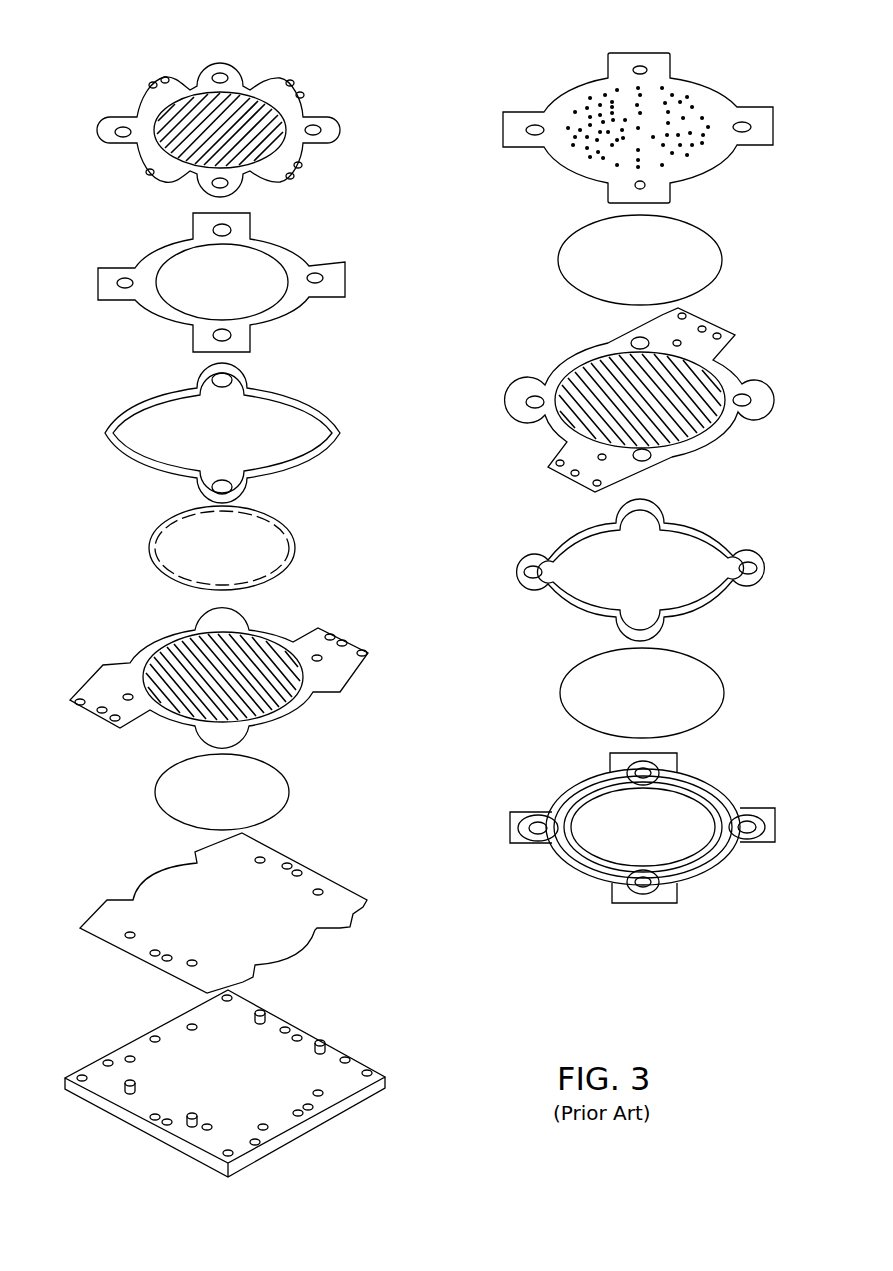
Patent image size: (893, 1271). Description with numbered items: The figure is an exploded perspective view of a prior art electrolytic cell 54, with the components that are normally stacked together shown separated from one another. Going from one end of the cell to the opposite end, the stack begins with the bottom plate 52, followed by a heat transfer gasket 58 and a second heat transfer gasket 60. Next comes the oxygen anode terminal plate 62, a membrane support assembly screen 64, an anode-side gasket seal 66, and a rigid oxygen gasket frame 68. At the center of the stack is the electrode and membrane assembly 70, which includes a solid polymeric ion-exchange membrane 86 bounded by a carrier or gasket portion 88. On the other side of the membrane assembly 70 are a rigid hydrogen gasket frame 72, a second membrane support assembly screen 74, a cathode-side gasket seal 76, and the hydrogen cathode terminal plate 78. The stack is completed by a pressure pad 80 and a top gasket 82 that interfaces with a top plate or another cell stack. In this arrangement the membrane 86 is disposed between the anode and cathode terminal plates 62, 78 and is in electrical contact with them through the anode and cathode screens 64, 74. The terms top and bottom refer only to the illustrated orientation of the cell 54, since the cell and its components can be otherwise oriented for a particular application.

The bottom plate 52 is at (92, 1067).
The electrolytic cell 54 is at (590, 948).
The heat transfer gasket 58 is at (163, 872).
The second heat transfer gasket 60 is at (170, 765).
The oxygen anode terminal plate 62 is at (157, 633).
The membrane support assembly screen 64 is at (163, 517).
The anode-side gasket seal 66 is at (158, 395).
The rigid oxygen gasket frame 68 is at (133, 258).
The electrode and membrane assembly 70 is at (190, 82).
The rigid hydrogen gasket frame 72 is at (565, 780).
The membrane support assembly screen 74 is at (565, 665).
The cathode-side gasket seal 76 is at (565, 530).
The hydrogen cathode terminal plate 78 is at (568, 360).
The pressure pad 80 is at (573, 227).
The top gasket 82 is at (567, 82).
The solid polymeric ion-exchange membrane 86 is at (237, 97).
The carrier or gasket portion 88 is at (327, 138).